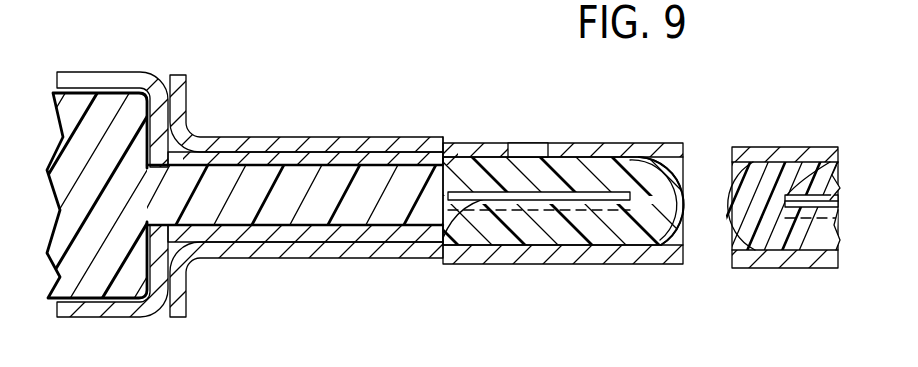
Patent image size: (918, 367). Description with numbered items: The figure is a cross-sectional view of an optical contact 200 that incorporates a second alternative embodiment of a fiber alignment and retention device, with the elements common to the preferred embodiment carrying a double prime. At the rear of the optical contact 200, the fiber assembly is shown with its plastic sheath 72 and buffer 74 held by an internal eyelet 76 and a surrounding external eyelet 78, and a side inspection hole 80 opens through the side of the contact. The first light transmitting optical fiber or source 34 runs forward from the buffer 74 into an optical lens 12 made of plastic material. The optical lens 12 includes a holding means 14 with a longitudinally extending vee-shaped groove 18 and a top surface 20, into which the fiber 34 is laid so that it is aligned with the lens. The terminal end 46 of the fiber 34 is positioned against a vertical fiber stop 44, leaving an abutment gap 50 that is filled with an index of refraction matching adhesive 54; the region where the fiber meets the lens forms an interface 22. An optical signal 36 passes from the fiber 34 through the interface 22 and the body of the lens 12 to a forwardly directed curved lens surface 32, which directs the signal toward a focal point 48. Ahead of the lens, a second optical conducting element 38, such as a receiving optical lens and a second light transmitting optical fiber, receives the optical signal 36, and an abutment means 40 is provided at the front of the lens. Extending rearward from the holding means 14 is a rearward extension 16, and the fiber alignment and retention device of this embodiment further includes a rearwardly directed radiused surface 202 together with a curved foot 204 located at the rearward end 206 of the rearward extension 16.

The plastic sheath 72 is at (100, 123).
The internal eyelet 76 is at (177, 28).
The external eyelet 78 is at (247, 140).
The side inspection hole 80 is at (318, 137).
The buffer 74 is at (207, 200).
The optical contact 200 is at (224, 62).
The forwardly directed curved lens surface 32 is at (690, 180).
The rearward end 206 is at (465, 143).
The holding means 14 is at (438, 245).
The curved foot 204 is at (467, 228).
The longitudinally extending vee-shaped groove 18 is at (535, 220).
The top surface 20 is at (567, 220).
The vertical fiber stop 44 is at (627, 215).
The terminal end 46 is at (755, 280).
The interface 22 is at (682, 240).
The optical signal 36 is at (433, 143).
The first light transmitting optical fiber 34 is at (433, 147).
The rearward extension 16 is at (557, 148).
The index of refraction matching adhesive 54 is at (562, 148).
The abutment gap 50 is at (566, 148).
The rearwardly directed radiused surface 202 is at (573, 148).
The optical lens 12 is at (615, 148).
The focal point 48 is at (645, 148).
The abutment means 40 is at (665, 148).
The second optical conducting element 38 is at (812, 100).